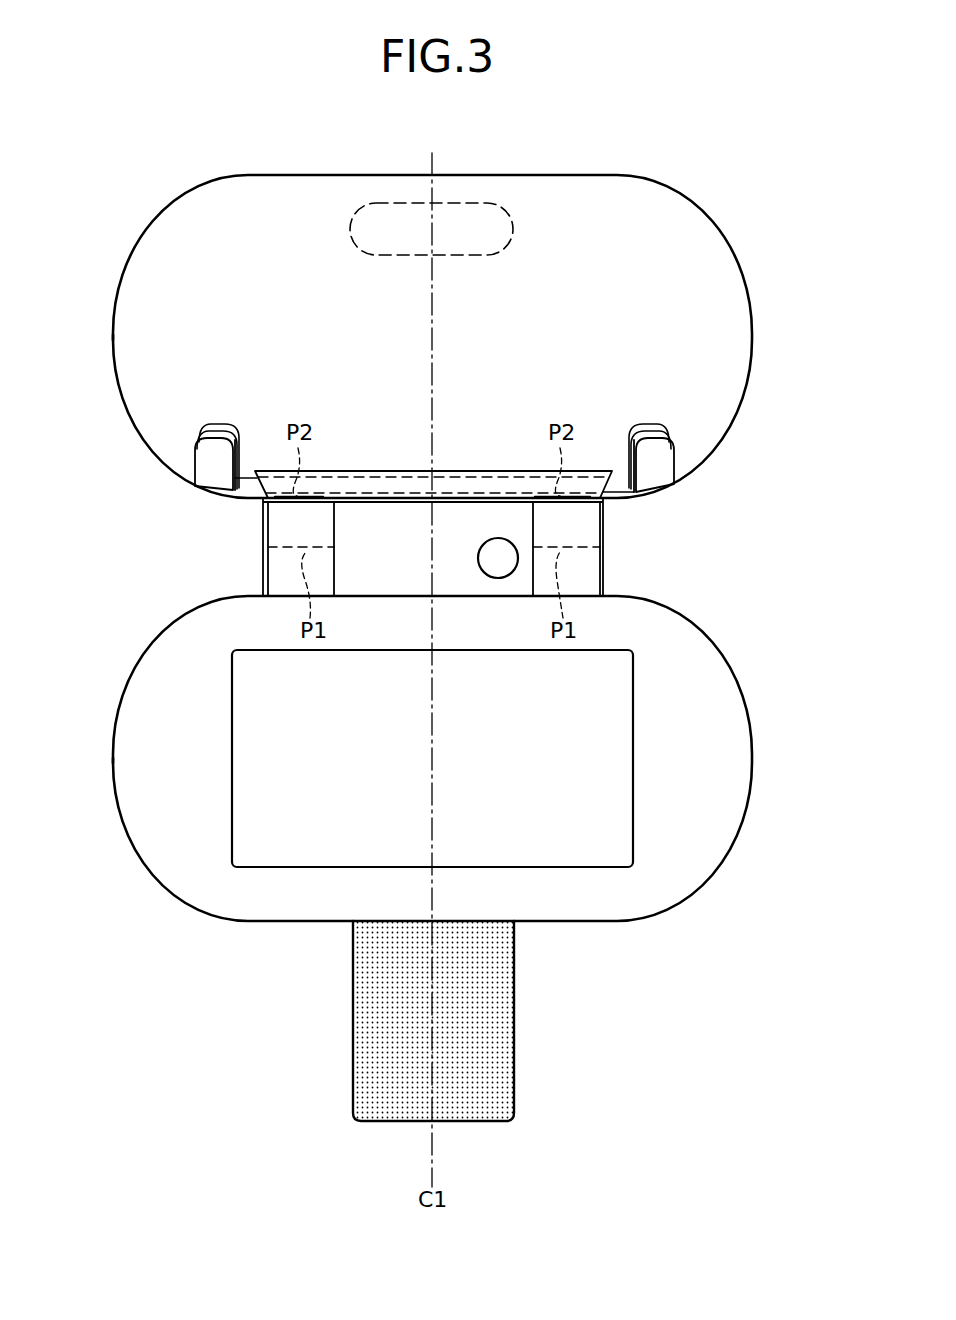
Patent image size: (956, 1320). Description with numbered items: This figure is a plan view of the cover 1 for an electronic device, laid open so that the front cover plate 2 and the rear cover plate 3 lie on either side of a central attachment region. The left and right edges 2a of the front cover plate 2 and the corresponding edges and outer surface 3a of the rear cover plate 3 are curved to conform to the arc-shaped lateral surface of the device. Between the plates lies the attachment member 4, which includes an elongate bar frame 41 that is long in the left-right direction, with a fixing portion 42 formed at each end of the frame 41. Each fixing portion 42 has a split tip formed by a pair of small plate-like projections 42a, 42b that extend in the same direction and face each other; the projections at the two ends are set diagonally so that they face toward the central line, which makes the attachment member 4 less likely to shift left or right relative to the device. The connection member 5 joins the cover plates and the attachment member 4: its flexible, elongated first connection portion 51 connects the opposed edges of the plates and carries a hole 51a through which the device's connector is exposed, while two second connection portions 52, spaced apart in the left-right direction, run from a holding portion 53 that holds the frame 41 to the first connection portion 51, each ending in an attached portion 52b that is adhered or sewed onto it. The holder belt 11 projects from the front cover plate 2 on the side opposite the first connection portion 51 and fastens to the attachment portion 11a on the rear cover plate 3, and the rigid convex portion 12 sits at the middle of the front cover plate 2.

The cover 1 is at (570, 153).
The front cover plate 2 is at (745, 745).
The left and right edges of the front cover plate 2a is at (116, 762).
The rear cover plate 3 is at (738, 297).
The outer surface of the rear cover plate 3a is at (115, 335).
The attachment member 4 is at (433, 442).
The frame 41 is at (410, 470).
The fixing portion 42 is at (437, 445).
The projection 42a is at (215, 432).
The projection 42b is at (196, 463).
The connection member 5 is at (435, 530).
The first connection portion 51 is at (357, 510).
The hole 51a is at (493, 567).
The second connection portion 52 is at (268, 530).
The attached portion 52b is at (330, 570).
The holding portion 53 is at (520, 496).
The holder belt 11 is at (514, 1040).
The attachment portion 11a is at (514, 228).
The convex portion 12 is at (634, 680).